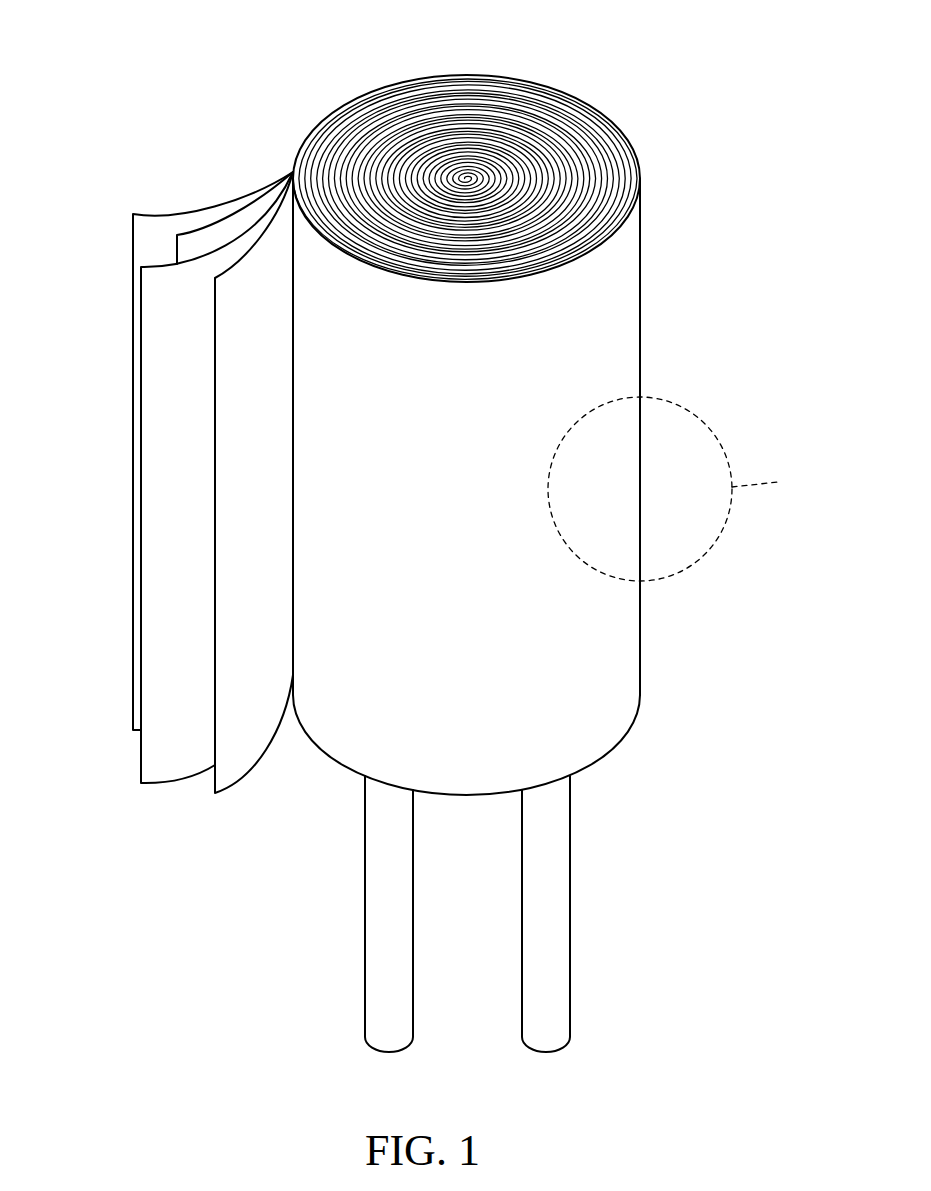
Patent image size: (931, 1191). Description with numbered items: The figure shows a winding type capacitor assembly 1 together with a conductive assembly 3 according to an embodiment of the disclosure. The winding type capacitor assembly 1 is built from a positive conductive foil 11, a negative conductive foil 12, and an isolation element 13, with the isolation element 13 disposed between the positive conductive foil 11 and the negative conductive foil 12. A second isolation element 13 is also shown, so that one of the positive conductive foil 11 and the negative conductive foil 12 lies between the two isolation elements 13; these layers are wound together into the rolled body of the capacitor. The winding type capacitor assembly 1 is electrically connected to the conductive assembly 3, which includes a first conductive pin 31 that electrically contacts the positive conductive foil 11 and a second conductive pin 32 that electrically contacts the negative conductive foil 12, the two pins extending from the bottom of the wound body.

The winding type capacitor assembly 1 is at (351, 96).
The positive conductive foil 11 is at (196, 247).
The negative conductive foil 12 is at (255, 302).
The isolation element 13 is at (170, 322).
The conductive assembly 3 is at (407, 914).
The first conductive pin 31 is at (393, 882).
The second conductive pin 32 is at (543, 941).